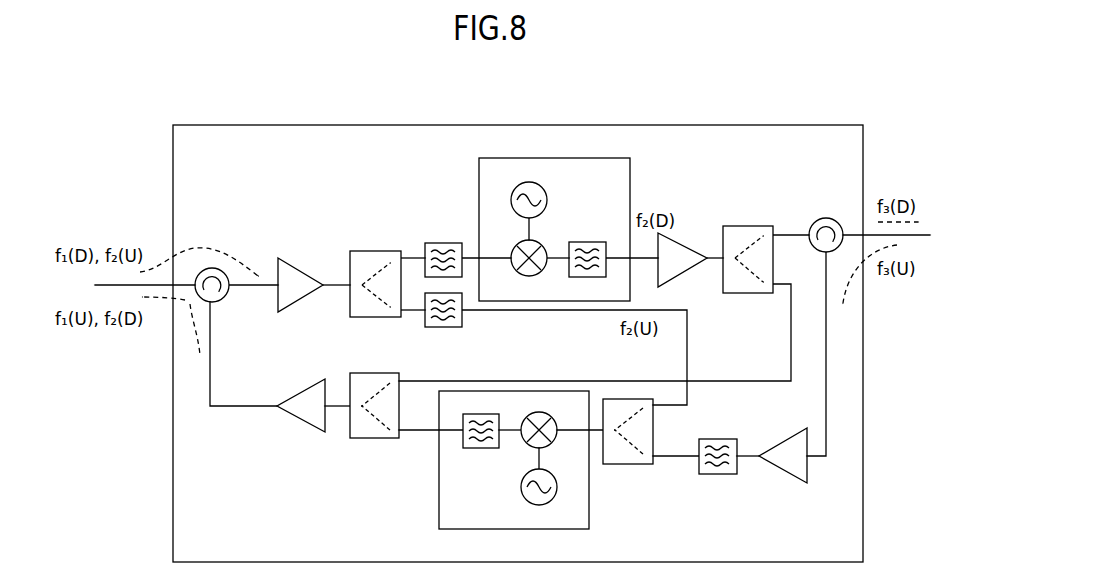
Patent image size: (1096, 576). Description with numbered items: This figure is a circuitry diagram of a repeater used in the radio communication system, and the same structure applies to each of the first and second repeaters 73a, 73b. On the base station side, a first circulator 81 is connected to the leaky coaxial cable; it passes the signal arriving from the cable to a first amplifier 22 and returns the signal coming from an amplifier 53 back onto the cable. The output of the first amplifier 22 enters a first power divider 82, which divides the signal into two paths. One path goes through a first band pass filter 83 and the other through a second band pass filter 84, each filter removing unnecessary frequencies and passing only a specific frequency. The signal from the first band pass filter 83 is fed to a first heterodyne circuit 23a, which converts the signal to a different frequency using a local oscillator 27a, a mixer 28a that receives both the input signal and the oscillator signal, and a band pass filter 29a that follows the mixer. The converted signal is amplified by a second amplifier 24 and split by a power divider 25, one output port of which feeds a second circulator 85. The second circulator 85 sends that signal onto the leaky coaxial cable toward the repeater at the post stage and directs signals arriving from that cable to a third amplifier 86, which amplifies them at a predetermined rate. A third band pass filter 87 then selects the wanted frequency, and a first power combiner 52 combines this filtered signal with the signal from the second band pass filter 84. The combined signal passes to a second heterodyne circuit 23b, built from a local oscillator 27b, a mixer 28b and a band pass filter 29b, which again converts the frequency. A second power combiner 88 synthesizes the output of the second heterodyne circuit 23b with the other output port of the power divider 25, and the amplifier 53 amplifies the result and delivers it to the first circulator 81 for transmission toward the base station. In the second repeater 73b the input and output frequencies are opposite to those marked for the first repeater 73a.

The first repeater 73a is at (203, 110).
The second repeater 73b is at (490, 305).
The first circulator 81 is at (224, 297).
The first amplifier 22 is at (277, 262).
The first power divider 82 is at (352, 251).
The first band pass filter 83 is at (425, 250).
The second band pass filter 84 is at (425, 320).
The first heterodyne circuit 23a is at (633, 163).
The local oscillator 27a is at (529, 182).
The mixer 28a is at (529, 276).
The band pass filter 29a is at (578, 242).
The second amplifier 24 is at (676, 270).
The power divider 25 is at (745, 226).
The second circulator 85 is at (826, 218).
The third amplifier 86 is at (790, 440).
The third band pass filter 87 is at (720, 475).
The first power combiner 52 is at (610, 464).
The second heterodyne circuit 23b is at (437, 515).
The mixer 28b is at (539, 412).
The band pass filter 29b is at (490, 448).
The local oscillator 27b is at (539, 505).
The second power combiner 88 is at (352, 430).
The amplifier 53 is at (300, 412).